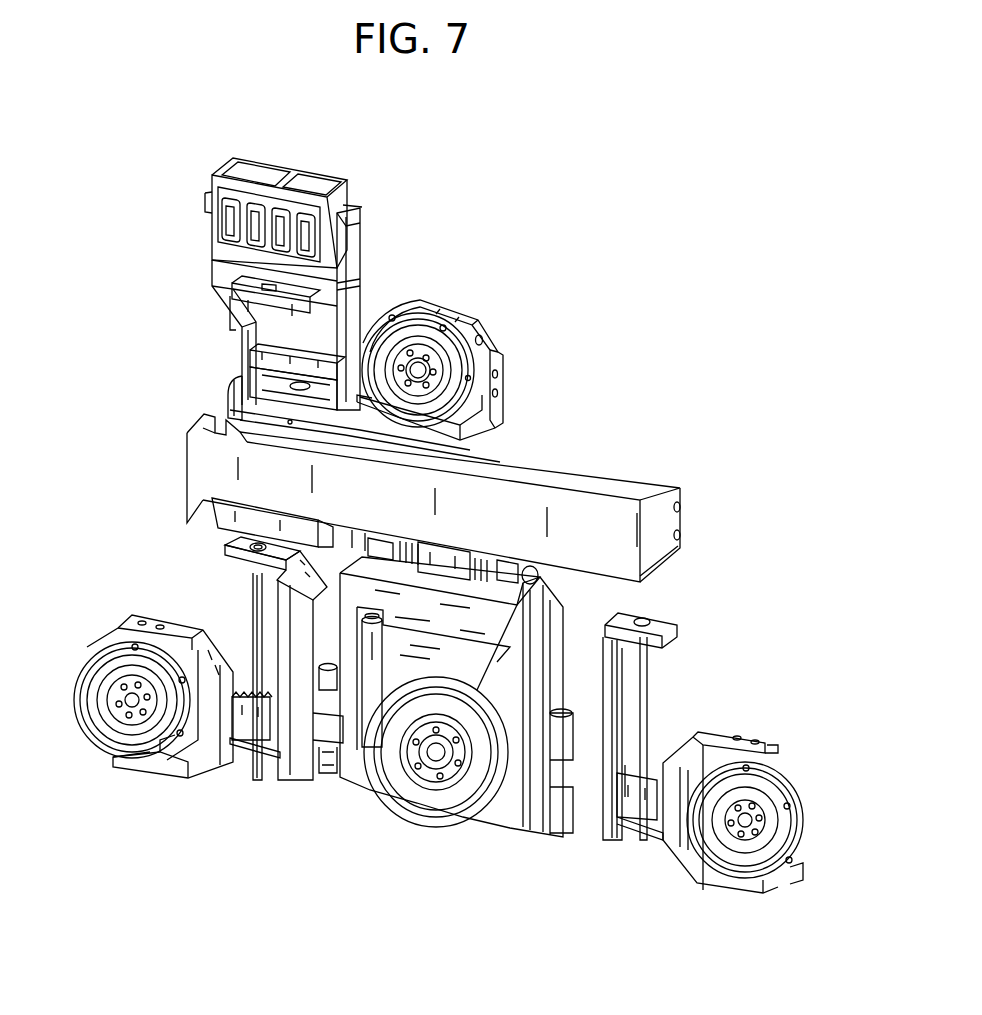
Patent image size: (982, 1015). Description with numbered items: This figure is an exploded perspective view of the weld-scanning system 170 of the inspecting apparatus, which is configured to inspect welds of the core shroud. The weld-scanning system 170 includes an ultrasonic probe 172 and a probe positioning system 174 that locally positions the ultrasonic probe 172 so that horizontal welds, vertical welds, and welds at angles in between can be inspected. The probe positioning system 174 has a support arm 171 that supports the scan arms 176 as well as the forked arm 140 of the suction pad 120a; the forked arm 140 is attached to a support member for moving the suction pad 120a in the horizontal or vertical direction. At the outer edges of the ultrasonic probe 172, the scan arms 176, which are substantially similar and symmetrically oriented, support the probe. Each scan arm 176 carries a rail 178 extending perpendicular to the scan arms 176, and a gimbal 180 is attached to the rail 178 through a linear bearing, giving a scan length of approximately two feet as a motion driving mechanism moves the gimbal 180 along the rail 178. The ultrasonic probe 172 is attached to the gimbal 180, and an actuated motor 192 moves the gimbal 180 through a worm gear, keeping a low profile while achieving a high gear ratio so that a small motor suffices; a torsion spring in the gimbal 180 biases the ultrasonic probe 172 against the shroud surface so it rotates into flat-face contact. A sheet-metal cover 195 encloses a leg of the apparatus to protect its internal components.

The weld-scanning system 170 is at (396, 172).
The ultrasonic probe 172 is at (343, 200).
The scan arm 176 is at (360, 297).
The gimbal 180 is at (310, 298).
The rail 178 is at (215, 292).
The actuated motor 192 is at (248, 362).
The probe positioning system 174 is at (230, 391).
The support arm 171 is at (273, 424).
The cover 195 is at (627, 482).
The suction pad 120a is at (411, 348).
The forked arm 140 is at (503, 389).